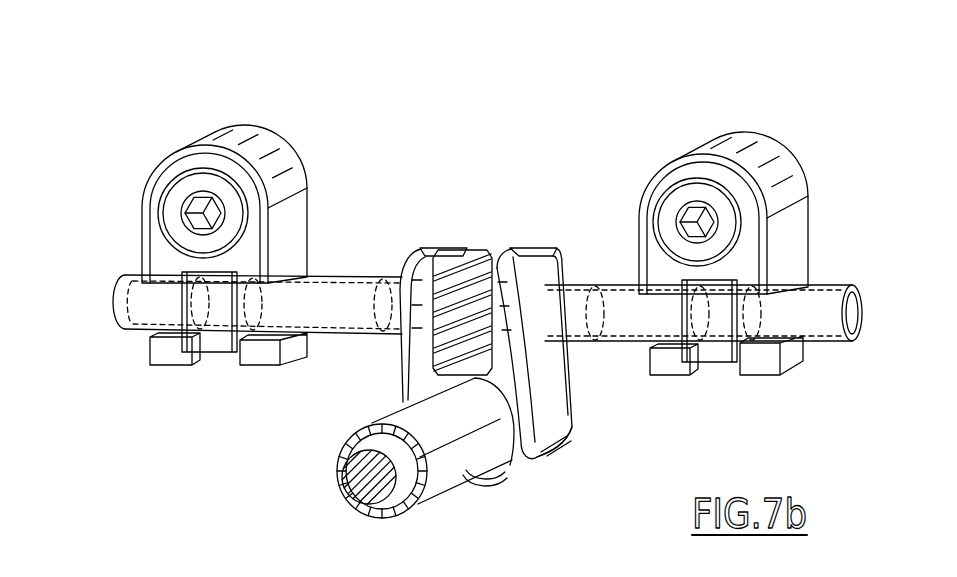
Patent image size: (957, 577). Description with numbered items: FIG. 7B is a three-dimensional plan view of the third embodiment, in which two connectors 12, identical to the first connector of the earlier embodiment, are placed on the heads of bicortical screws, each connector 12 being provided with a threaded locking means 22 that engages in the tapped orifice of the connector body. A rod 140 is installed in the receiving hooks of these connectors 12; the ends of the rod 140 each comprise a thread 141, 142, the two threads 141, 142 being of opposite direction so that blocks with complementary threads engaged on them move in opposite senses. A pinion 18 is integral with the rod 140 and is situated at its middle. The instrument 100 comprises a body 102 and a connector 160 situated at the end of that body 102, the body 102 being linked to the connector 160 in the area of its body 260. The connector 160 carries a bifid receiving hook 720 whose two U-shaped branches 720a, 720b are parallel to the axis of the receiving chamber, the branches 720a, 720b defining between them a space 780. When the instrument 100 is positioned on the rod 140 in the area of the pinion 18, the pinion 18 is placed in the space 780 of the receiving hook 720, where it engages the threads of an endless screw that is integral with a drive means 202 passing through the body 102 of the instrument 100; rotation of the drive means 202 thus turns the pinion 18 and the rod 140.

The connector 12 is at (239, 112).
The locking means 22 is at (227, 196).
The rod 140 is at (492, 279).
The thread 141 is at (132, 340).
The thread 142 is at (828, 356).
The receiving hook 720 is at (494, 274).
The branch of receiving hook 720a is at (437, 245).
The branch of receiving hook 720b is at (573, 312).
The space 780 is at (429, 277).
The pinion 18 is at (436, 332).
The connector 160 is at (550, 390).
The instrument 100 is at (417, 322).
The body of instrument 102 is at (422, 466).
The drive means 202 is at (350, 492).
The body of connector 260 is at (496, 485).